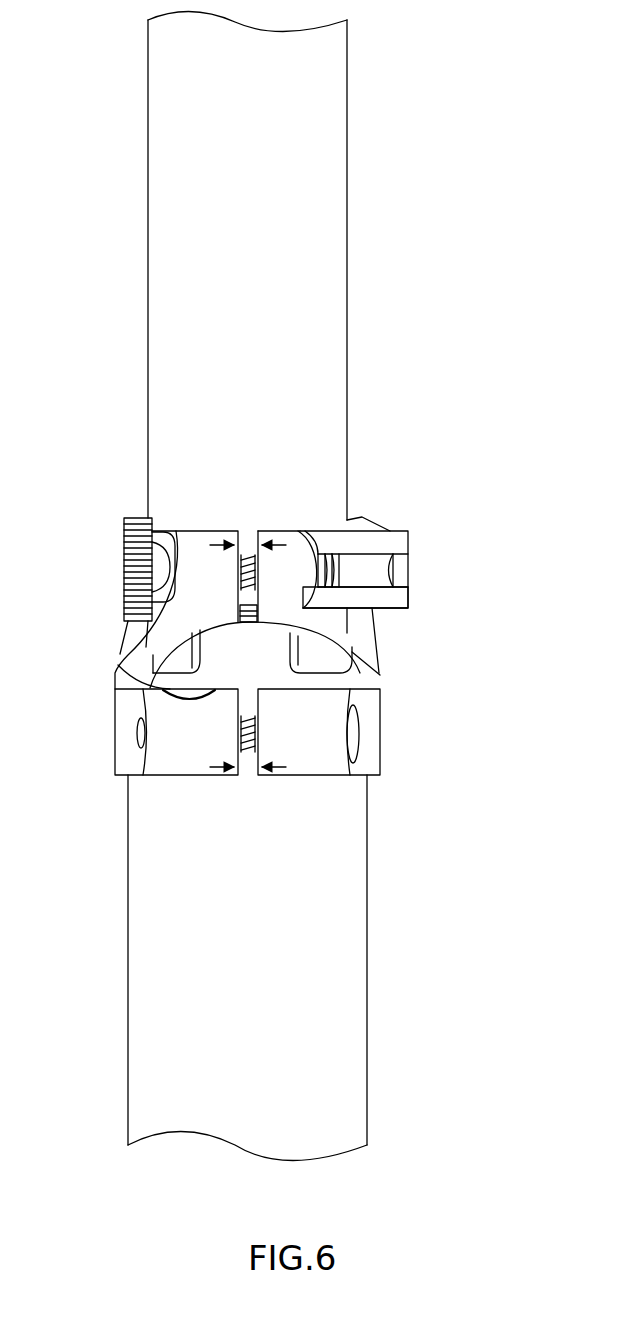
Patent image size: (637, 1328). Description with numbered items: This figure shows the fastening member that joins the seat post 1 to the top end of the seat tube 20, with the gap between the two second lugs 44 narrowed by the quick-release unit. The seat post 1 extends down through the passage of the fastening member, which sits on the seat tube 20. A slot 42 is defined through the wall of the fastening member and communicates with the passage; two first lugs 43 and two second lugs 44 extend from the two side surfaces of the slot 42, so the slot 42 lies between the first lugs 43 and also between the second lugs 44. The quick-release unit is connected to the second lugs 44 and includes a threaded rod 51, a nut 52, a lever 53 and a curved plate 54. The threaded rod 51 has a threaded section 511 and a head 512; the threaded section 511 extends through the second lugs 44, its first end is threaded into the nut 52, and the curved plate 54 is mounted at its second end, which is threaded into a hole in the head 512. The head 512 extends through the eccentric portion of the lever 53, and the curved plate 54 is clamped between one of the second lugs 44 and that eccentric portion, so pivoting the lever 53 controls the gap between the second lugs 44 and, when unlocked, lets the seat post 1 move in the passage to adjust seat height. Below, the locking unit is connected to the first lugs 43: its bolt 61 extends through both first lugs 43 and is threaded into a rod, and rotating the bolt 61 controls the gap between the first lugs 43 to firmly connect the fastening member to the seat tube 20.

The seat post 1 is at (352, 194).
The seat tube 20 is at (125, 934).
The slot 42 is at (247, 526).
The first lugs 43 is at (190, 775).
The second lugs 44 is at (185, 545).
The threaded rod 51 is at (485, 437).
The threaded section 511 is at (345, 565).
The head 512 is at (385, 562).
The nut 52 is at (126, 538).
The lever 53 is at (398, 595).
The curved plate 54 is at (327, 520).
The bolt 61 is at (248, 775).